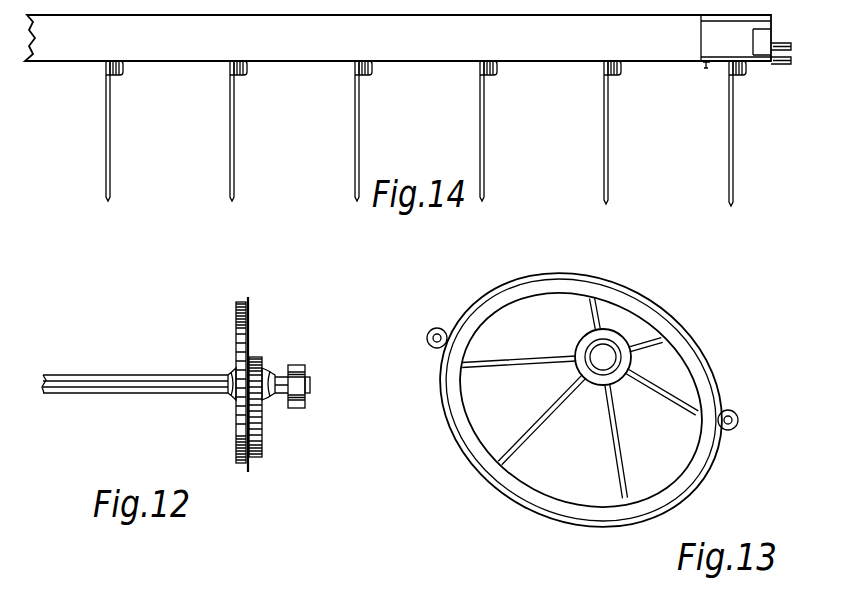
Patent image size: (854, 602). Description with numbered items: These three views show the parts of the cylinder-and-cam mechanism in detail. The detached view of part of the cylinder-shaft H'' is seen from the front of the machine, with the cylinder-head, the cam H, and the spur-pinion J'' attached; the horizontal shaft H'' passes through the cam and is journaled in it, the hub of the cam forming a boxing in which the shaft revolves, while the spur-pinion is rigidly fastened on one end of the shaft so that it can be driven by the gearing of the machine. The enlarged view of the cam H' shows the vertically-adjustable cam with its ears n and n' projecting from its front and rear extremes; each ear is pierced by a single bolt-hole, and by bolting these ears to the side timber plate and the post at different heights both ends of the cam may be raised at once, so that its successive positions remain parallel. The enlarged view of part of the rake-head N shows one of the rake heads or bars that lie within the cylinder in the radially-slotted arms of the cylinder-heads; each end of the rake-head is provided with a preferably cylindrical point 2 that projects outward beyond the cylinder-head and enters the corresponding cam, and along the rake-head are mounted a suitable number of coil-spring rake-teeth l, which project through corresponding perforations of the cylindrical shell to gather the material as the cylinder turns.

In FIG. 14, the rake-head N is at (398, 41).
In FIG. 14, the slats 2 is at (788, 55).
In FIG. 14, the coil-spring rake-teeth l is at (426, 133).
In FIG. 12, the cylinder-shaft H'' is at (165, 378).
In FIG. 12, the cam H is at (251, 384).
In FIG. 12, the spur-pinion J'' is at (299, 376).
In FIG. 13, the cam H' is at (580, 400).
In FIG. 13, the ear n is at (426, 337).
In FIG. 13, the ear n' is at (740, 421).